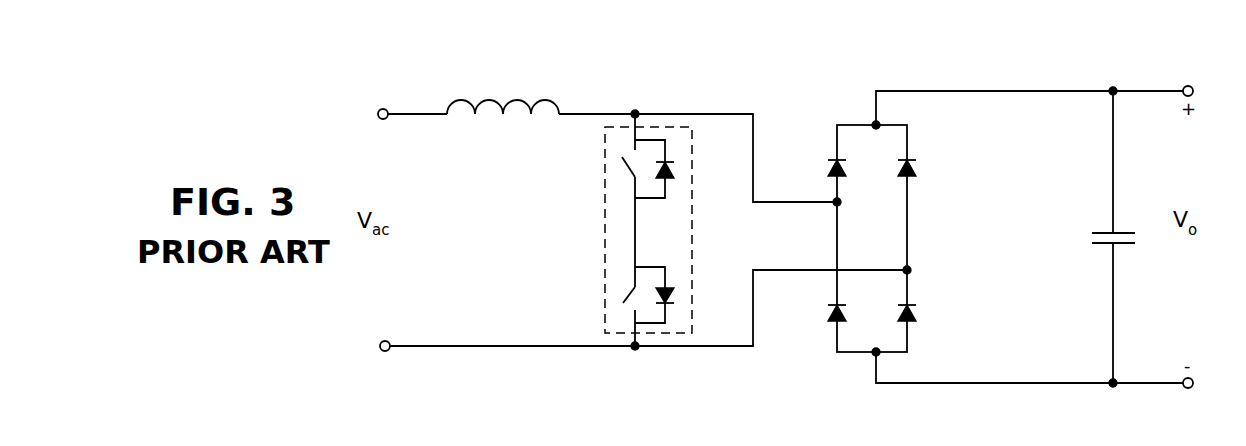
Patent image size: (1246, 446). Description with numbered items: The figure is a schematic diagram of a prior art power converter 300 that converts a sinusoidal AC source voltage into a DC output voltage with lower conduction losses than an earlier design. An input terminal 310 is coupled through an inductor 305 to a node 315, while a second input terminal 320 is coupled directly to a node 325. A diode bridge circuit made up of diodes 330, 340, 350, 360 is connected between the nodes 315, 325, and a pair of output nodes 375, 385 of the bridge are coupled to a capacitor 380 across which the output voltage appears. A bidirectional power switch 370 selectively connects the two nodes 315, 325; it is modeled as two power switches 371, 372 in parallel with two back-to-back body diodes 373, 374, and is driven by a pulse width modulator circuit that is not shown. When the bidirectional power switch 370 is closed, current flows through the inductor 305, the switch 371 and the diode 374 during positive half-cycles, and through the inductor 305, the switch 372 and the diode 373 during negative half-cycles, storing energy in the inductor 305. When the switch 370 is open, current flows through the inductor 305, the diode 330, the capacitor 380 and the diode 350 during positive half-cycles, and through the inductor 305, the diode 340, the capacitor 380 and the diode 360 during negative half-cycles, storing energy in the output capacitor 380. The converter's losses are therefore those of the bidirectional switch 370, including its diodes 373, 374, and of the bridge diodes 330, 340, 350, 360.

The power converter 300 is at (768, 60).
The inductor 305 is at (503, 96).
The input terminal 310 is at (383, 109).
The node 315 is at (836, 206).
The input terminal 320 is at (385, 341).
The node 325 is at (910, 269).
The diode 330 is at (829, 171).
The diode 340 is at (916, 171).
The diode 350 is at (916, 311).
The diode 360 is at (829, 315).
The bidirectional power switch 370 is at (648, 230).
The power switch 371 is at (621, 168).
The power switch 372 is at (622, 299).
The body diode 373 is at (676, 171).
The body diode 374 is at (676, 299).
The node 375 is at (873, 122).
The capacitor 380 is at (1092, 229).
The node 385 is at (874, 356).